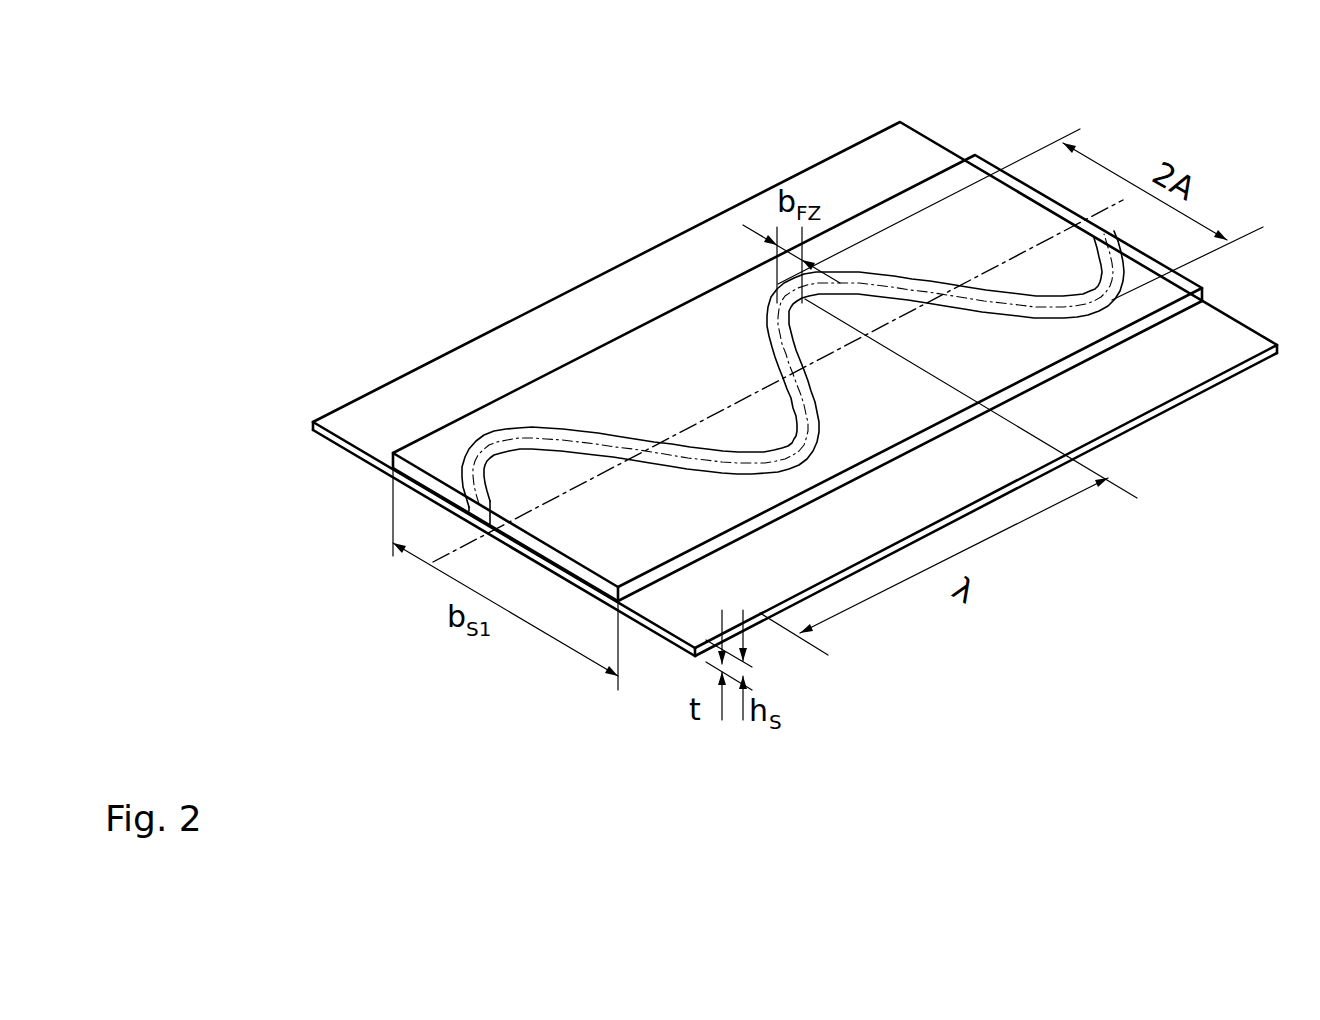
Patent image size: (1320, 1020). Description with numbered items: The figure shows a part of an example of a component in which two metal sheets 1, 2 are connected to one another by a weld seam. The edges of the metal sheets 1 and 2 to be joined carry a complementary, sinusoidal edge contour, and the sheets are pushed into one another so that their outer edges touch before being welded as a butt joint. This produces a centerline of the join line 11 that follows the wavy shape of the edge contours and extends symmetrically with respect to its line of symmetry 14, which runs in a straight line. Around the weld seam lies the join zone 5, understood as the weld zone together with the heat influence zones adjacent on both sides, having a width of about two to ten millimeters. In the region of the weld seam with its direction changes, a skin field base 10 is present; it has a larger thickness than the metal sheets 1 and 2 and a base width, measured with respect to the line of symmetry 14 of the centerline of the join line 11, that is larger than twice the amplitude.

The metal sheet 1 is at (398, 417).
The metal sheet 2 is at (678, 592).
The skin field base 10 is at (448, 437).
The join zone 5 is at (589, 443).
The centerline of the join line 11 is at (788, 342).
The line of symmetry 14 is at (720, 410).